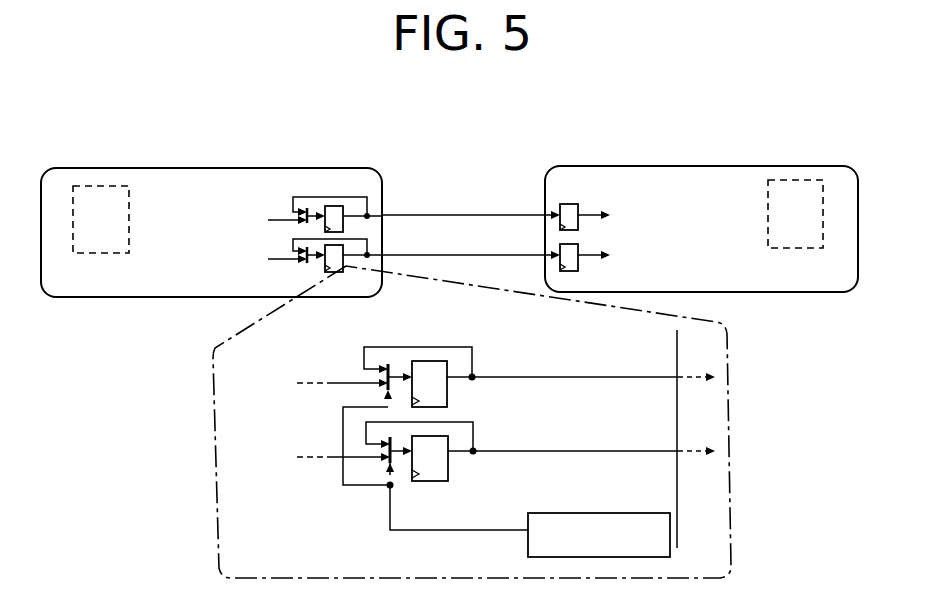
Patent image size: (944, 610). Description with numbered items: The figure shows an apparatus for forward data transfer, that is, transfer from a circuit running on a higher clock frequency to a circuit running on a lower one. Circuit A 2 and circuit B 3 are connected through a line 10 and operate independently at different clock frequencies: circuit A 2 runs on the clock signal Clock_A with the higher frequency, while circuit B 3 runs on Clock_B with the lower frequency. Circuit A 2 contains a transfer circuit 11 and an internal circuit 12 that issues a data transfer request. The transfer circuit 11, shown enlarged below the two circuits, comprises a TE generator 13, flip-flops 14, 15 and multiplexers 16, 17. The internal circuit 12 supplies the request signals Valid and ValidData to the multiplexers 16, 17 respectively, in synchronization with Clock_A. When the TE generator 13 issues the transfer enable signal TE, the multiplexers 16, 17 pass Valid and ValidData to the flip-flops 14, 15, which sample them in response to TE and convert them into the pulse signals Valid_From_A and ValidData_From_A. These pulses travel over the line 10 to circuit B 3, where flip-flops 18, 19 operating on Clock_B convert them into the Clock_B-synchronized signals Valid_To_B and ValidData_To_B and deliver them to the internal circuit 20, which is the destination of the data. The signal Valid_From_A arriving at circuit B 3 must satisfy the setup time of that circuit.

The circuit A 2 is at (307, 168).
The circuit B 3 is at (828, 166).
The line 10 is at (452, 266).
The transfer circuit 11 is at (547, 422).
The internal circuit 12 is at (91, 186).
The transfer enable signal generator 13 is at (595, 513).
The flip-flop 14 is at (428, 361).
The flip-flop 15 is at (433, 481).
The multiplexer 16 is at (388, 357).
The multiplexer 17 is at (385, 468).
The flip-flop 18 is at (567, 204).
The flip-flop 19 is at (580, 265).
The internal circuit 20 is at (797, 180).